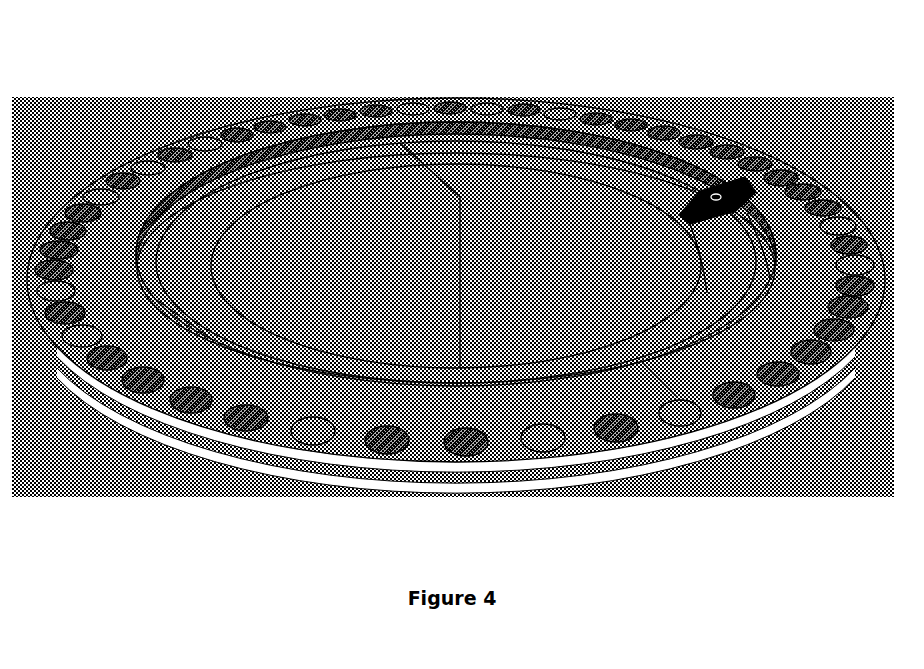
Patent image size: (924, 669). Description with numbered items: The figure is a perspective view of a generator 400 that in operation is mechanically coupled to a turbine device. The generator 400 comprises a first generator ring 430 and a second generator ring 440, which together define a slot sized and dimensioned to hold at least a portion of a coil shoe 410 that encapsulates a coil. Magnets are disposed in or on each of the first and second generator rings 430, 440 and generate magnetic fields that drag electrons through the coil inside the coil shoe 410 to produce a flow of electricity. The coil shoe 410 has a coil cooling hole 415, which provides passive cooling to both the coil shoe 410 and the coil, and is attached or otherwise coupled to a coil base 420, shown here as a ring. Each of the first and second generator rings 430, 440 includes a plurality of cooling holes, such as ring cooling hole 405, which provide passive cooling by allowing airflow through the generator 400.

The generator 400 is at (219, 88).
The ring cooling hole 405 is at (205, 393).
The coil shoe 410 is at (722, 194).
The coil cooling hole 415 is at (716, 194).
The coil base 420 is at (667, 318).
The first generator ring 430 is at (730, 418).
The second generator ring 440 is at (631, 470).